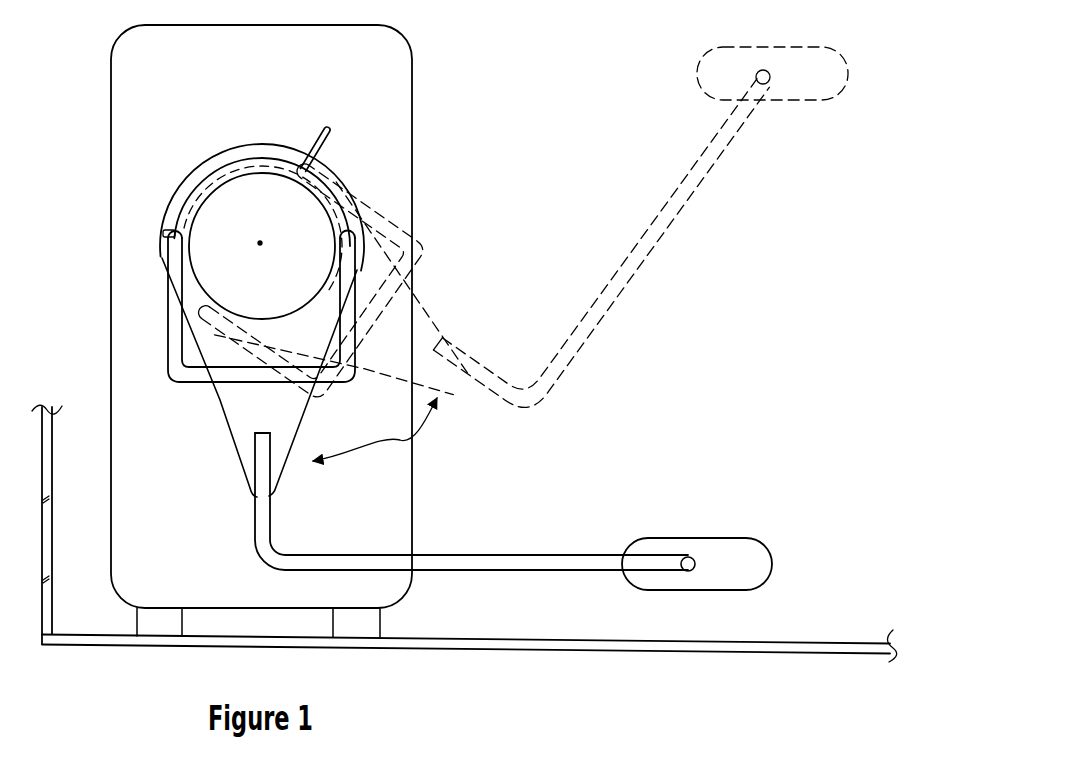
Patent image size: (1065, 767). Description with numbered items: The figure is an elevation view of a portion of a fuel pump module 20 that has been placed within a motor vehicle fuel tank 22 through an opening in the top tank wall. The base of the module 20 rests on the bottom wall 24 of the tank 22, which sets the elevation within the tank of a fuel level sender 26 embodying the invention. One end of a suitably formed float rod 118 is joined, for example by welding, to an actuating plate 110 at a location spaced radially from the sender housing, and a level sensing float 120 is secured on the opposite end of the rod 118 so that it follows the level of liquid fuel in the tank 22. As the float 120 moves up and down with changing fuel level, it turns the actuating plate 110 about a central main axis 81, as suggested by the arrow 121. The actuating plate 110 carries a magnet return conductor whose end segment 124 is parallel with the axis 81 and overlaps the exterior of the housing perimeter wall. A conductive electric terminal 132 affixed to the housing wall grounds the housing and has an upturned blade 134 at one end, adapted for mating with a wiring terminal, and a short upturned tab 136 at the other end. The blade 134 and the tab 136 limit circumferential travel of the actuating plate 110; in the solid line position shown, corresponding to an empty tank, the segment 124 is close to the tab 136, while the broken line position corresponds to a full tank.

The fuel pump module 20 is at (416, 42).
The fuel tank 22 is at (51, 397).
The bottom wall 24 is at (447, 640).
The fuel level sender 26 is at (171, 357).
The central main axis 81 is at (260, 243).
The actuating plate 110 is at (230, 440).
The float rod 118 is at (262, 508).
The level sensing float 120 is at (668, 538).
The arrow 121 is at (398, 443).
The end segment 124 is at (160, 237).
The conductive electric terminal 132 is at (333, 138).
The upturned blade 134 is at (333, 152).
The upturned tab 136 is at (168, 229).